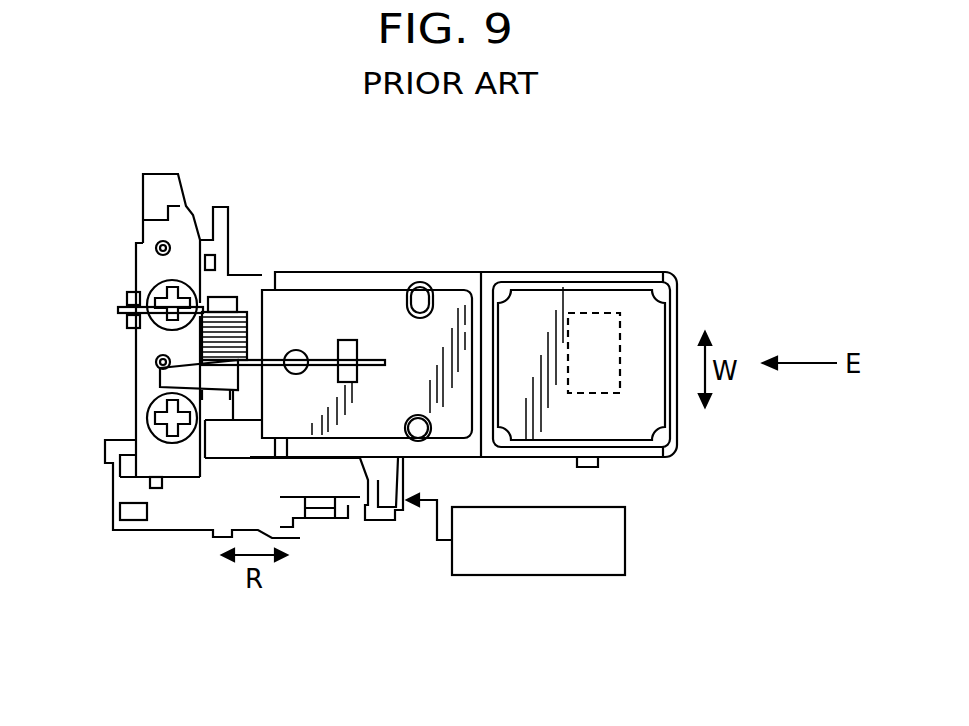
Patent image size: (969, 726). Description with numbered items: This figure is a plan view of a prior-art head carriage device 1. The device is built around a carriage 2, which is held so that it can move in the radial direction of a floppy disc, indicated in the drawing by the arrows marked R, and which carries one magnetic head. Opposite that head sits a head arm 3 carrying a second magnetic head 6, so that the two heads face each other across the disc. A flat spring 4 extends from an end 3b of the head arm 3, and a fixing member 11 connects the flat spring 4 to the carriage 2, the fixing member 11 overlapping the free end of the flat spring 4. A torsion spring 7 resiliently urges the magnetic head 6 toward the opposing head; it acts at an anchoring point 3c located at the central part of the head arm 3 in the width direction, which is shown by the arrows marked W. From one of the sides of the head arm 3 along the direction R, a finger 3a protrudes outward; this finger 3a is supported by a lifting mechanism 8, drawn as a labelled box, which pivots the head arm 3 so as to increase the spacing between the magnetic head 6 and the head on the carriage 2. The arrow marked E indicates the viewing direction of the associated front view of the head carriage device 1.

The head carriage device 1 is at (590, 258).
The carriage 2 is at (162, 528).
The head arm 3 is at (463, 272).
The finger 3a is at (385, 473).
The end of the head arm 3b is at (303, 317).
The anchoring point 3c is at (352, 340).
The flat spring 4 is at (248, 288).
The magnetic head 6 is at (602, 383).
The torsion spring 7 is at (272, 373).
The lifting mechanism 8 is at (625, 542).
The fixing member 11 is at (143, 353).